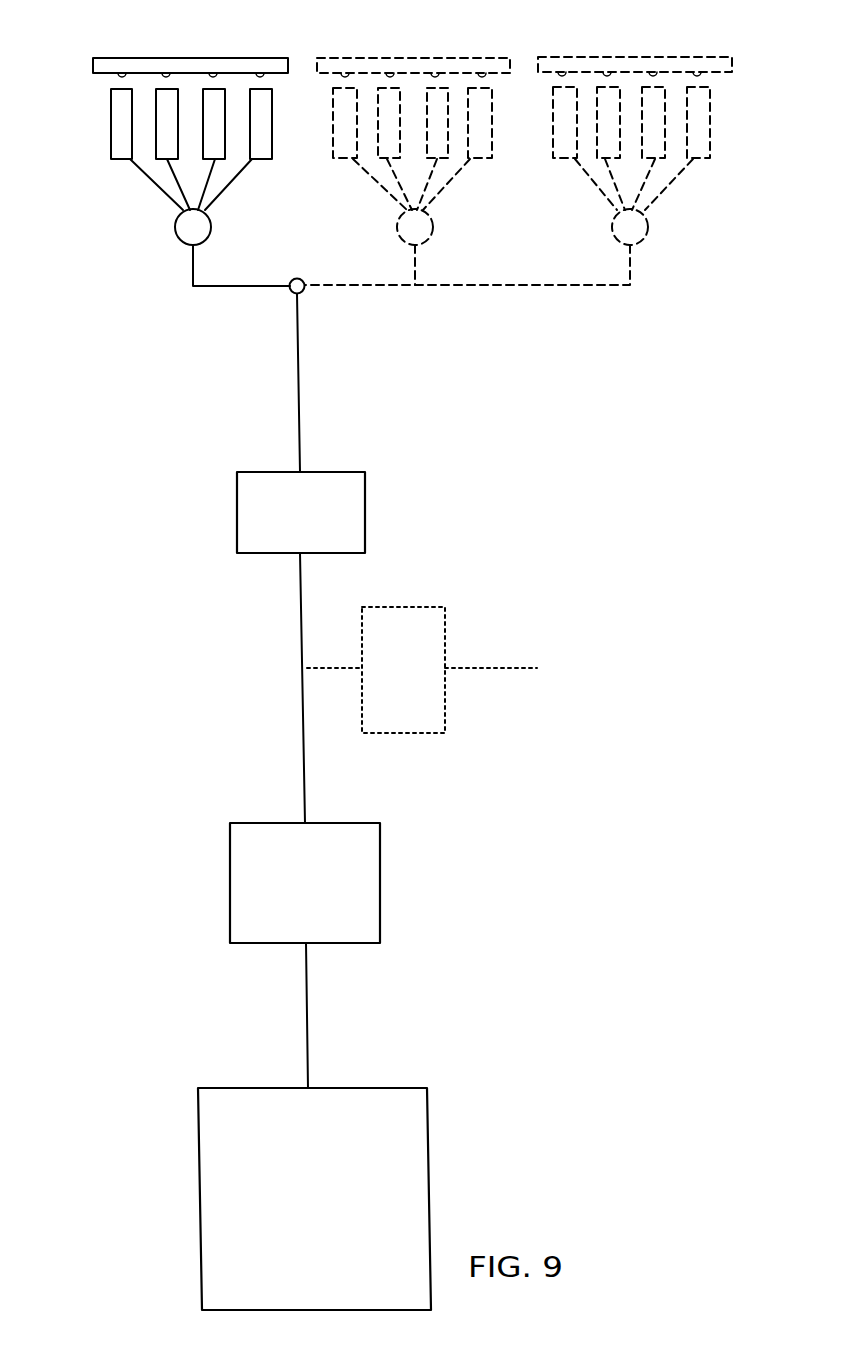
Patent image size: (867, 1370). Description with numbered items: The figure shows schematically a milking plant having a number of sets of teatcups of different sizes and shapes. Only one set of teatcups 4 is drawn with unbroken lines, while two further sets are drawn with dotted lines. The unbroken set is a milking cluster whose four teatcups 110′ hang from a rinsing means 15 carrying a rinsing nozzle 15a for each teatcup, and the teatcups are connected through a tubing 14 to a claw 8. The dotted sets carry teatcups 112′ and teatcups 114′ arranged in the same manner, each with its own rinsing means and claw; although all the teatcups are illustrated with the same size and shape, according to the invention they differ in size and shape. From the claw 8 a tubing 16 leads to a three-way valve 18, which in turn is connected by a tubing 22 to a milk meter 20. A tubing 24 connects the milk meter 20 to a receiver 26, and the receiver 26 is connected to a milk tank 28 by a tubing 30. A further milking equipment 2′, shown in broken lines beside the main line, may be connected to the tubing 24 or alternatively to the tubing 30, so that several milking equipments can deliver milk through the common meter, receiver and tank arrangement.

The first set of teatcups 4 is at (256, 144).
The claw 8 is at (187, 242).
The tubing 14 is at (237, 173).
The rinsing means 15 is at (181, 70).
The rinsing nozzle 15a is at (122, 77).
The tubing 16 is at (240, 287).
The three-way valve 18 is at (307, 278).
The milk meter 20 is at (342, 518).
The tubing 22 is at (300, 315).
The tubing 24 is at (302, 630).
The receiver 26 is at (365, 900).
The milk tank 28 is at (410, 1172).
The tubing 30 is at (308, 1032).
The teatcup 110′ is at (110, 143).
The teatcup 112′ is at (358, 98).
The teatcup 114′ is at (553, 137).
The further milking equipment 2′ is at (517, 563).